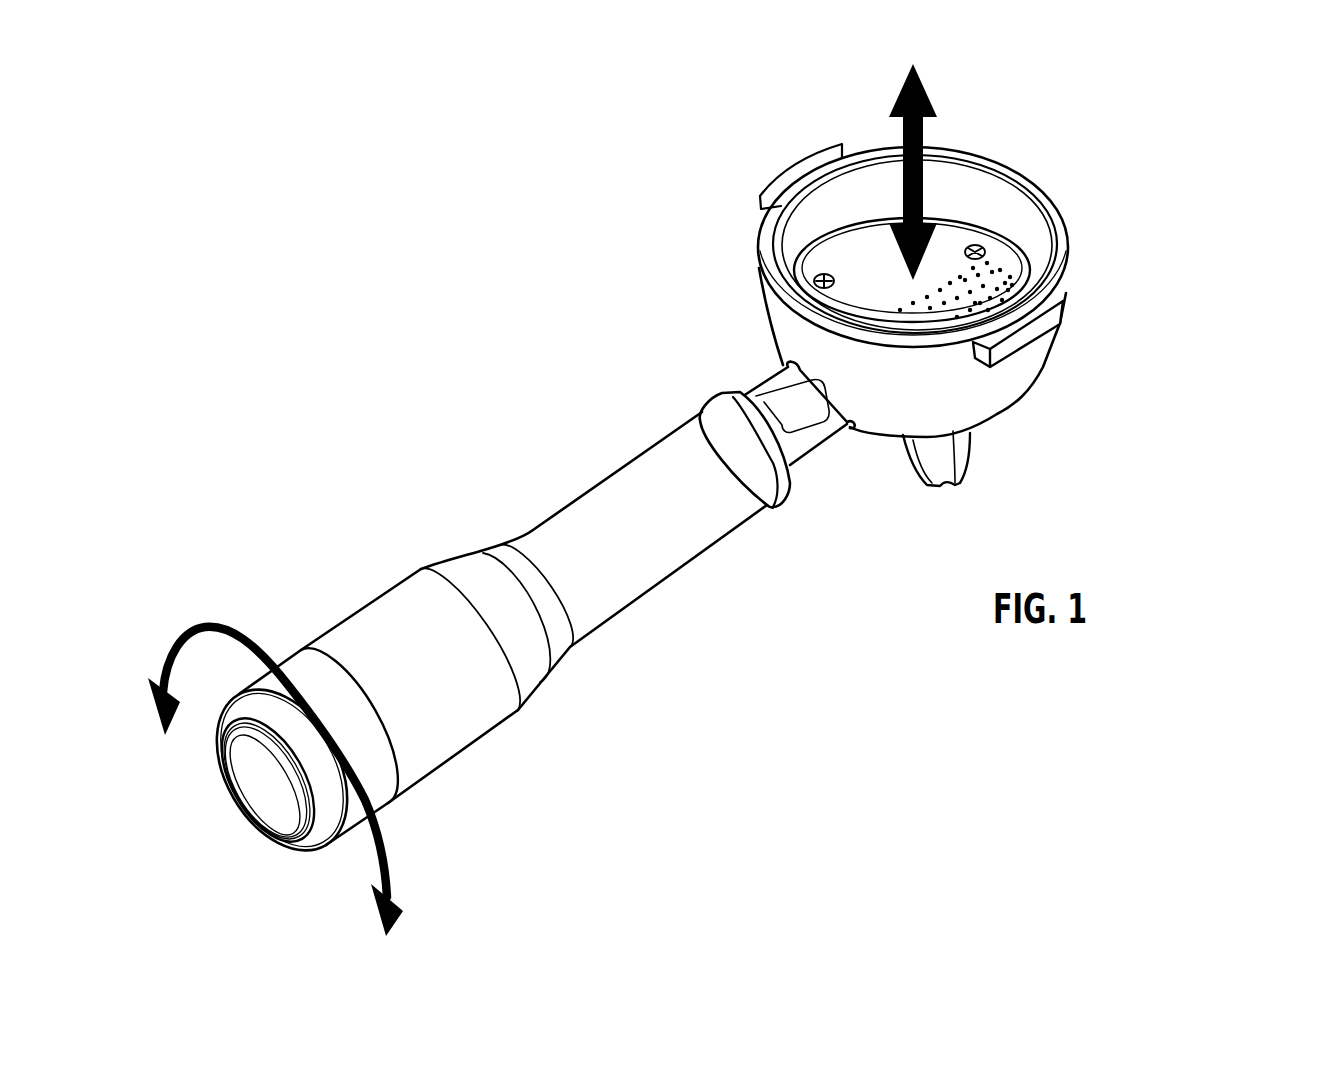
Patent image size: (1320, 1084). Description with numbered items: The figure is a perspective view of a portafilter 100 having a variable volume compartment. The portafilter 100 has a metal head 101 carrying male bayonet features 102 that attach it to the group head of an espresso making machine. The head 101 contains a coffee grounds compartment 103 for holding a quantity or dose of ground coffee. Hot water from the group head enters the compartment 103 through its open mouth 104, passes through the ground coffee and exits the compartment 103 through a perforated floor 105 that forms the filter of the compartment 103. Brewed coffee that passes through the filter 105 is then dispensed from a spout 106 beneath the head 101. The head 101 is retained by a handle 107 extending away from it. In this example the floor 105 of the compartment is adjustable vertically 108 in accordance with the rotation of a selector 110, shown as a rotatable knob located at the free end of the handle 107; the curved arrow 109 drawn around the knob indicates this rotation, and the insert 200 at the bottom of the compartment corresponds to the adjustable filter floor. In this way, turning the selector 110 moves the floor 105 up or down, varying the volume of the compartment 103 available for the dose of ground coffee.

The portafilter 100 is at (700, 497).
The head 101 is at (1017, 372).
The male bayonet features 102 is at (1050, 300).
The coffee grounds compartment 103 is at (1013, 217).
The open mouth 104 is at (993, 165).
The perforated floor 105 is at (987, 280).
The spout 106 is at (947, 453).
The handle 107 is at (700, 533).
The vertical adjustment 108 is at (928, 112).
The rotation arrow 109 is at (390, 853).
The selector 110 is at (297, 667).
The filter insert 200 is at (845, 230).